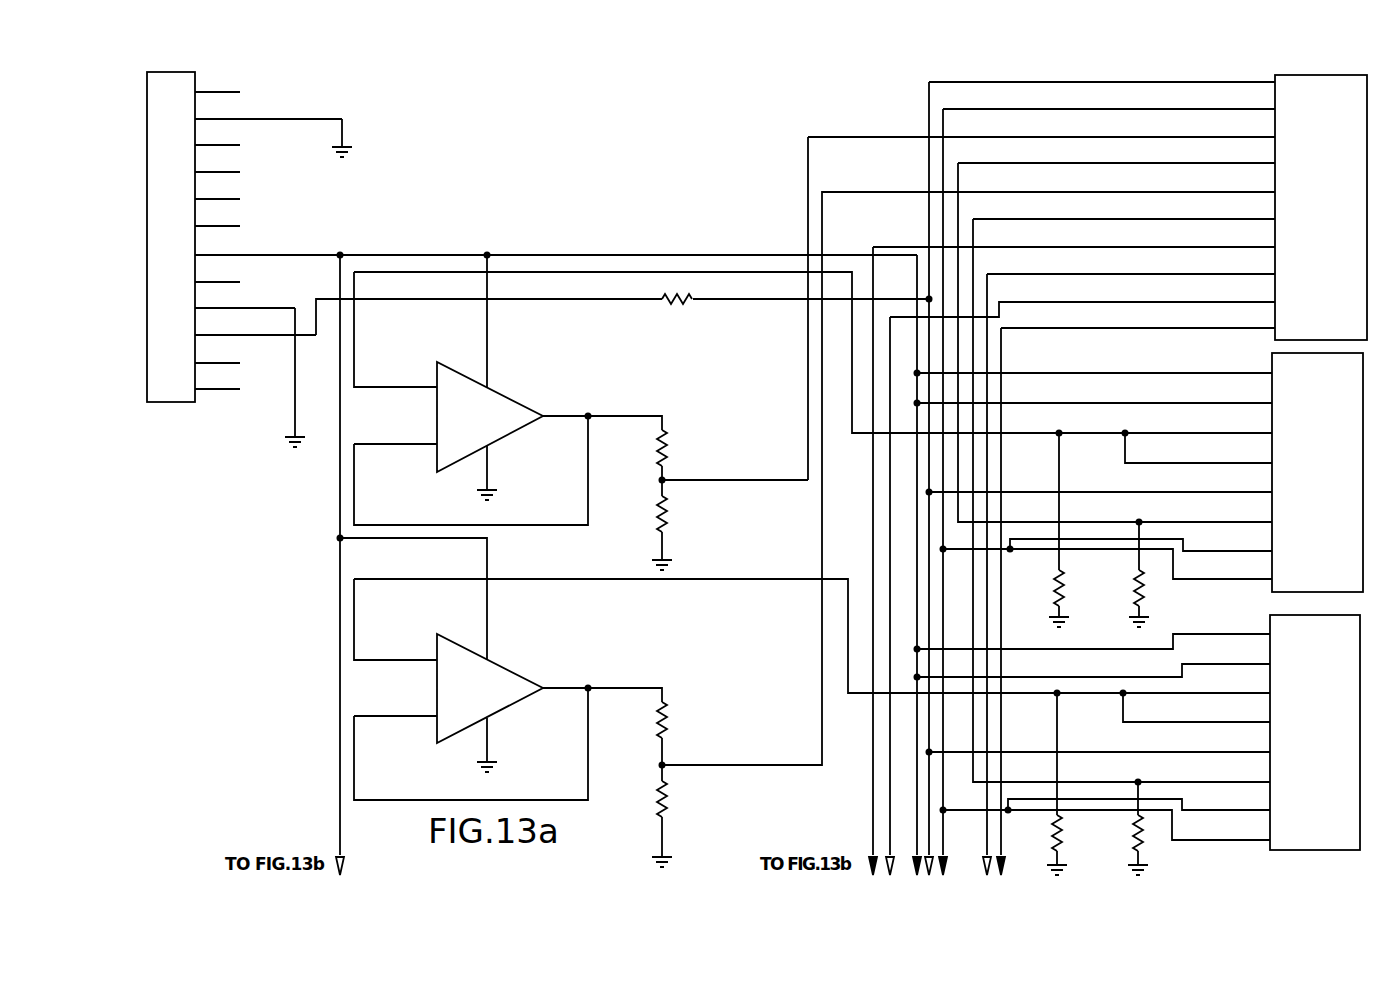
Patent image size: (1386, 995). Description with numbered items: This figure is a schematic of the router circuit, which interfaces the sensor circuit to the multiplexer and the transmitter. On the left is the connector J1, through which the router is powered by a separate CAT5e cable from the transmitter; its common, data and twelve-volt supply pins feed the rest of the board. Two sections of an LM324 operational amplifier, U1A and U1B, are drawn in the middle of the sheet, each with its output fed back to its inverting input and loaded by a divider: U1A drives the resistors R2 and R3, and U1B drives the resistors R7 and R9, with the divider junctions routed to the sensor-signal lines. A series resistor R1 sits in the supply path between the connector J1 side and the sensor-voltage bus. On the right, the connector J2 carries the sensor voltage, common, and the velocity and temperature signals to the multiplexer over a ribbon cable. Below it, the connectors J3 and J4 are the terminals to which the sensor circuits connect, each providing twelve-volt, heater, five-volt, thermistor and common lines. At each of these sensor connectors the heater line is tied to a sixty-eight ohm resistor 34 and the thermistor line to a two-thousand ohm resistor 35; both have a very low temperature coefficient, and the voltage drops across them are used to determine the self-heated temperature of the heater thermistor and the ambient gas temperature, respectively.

The 68 ohm resistor 34 is at (1066, 588).
The 2000 ohm resistor 35 is at (1143, 591).
The terminal J1 is at (253, 247).
The terminal J2 is at (1087, 194).
The terminal J3 is at (1139, 472).
The terminal J4 is at (1142, 748).
The operational amplifier LM324 section A U1A is at (813, 390).
The operational amplifier LM324 section B U1B is at (804, 668).
The resistor R1 240 ohm R1 is at (622, 326).
The resistor R2 20k R2 is at (652, 448).
The resistor R3 15.8k R3 is at (730, 524).
The resistor R7 20k R7 is at (652, 726).
The resistor R9 15.8k R9 is at (963, 529).